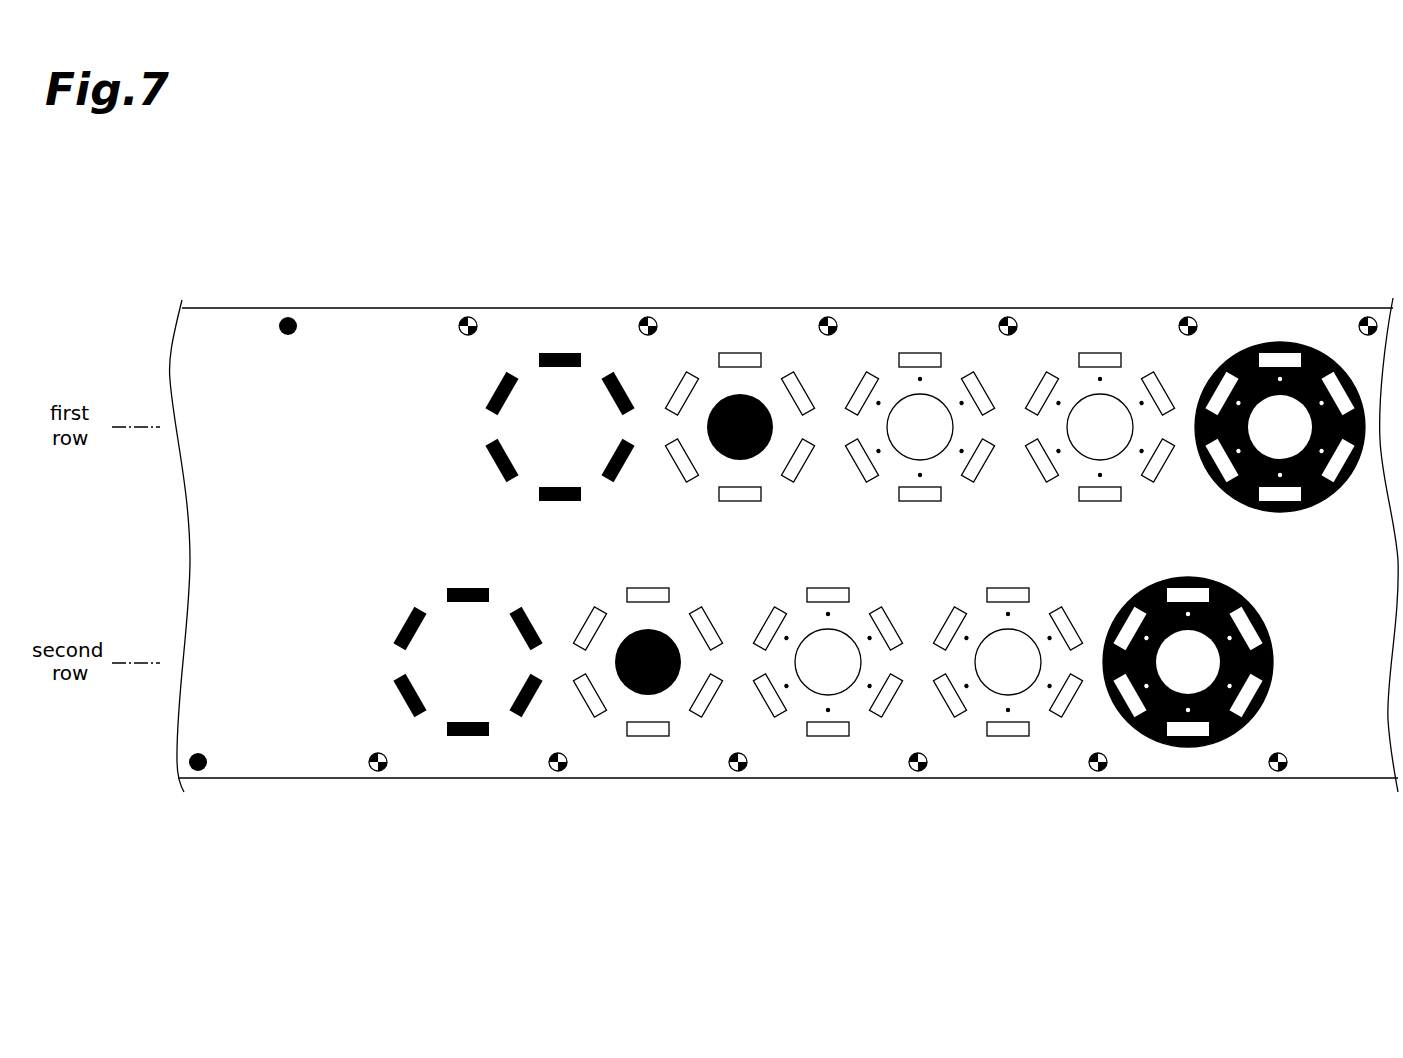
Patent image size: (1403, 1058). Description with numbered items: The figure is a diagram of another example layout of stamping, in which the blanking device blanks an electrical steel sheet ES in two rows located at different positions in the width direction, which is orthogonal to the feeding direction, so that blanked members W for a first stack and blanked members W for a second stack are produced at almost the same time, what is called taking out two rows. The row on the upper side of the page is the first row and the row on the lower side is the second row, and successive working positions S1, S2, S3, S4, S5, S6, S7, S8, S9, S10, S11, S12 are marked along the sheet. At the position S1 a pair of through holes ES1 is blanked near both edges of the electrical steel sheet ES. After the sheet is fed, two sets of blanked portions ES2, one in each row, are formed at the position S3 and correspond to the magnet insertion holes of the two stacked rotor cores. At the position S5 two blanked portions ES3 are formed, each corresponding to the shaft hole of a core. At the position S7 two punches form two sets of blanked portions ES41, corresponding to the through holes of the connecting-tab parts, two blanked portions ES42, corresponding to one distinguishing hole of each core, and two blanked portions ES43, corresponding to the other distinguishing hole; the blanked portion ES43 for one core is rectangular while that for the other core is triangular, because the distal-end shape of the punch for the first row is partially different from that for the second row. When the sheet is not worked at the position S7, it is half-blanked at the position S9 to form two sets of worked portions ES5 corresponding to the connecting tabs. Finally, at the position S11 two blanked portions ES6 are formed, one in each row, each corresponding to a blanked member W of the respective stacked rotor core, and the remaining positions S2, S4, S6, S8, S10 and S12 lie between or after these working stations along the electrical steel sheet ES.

The electrical steel sheet ES is at (1335, 747).
The through holes ES1 is at (299, 326).
The blanked portions ES2 is at (482, 398).
The blanked portions ES3 is at (762, 406).
The blanked portions ES41 is at (918, 378).
The blanked portions ES42 is at (941, 387).
The blanked portions ES43 is at (900, 465).
The worked portions ES5 is at (1103, 378).
The blanked portions ES6 is at (1302, 345).
The blanked member W is at (1344, 495).
The position S1 is at (288, 258).
The position S2 is at (468, 258).
The position S3 is at (558, 258).
The position S4 is at (648, 258).
The position S5 is at (738, 258).
The position S6 is at (828, 258).
The position S7 is at (918, 258).
The position S8 is at (1008, 258).
The position S9 is at (1098, 258).
The position S10 is at (1188, 258).
The position S11 is at (1278, 258).
The position S12 is at (1368, 258).